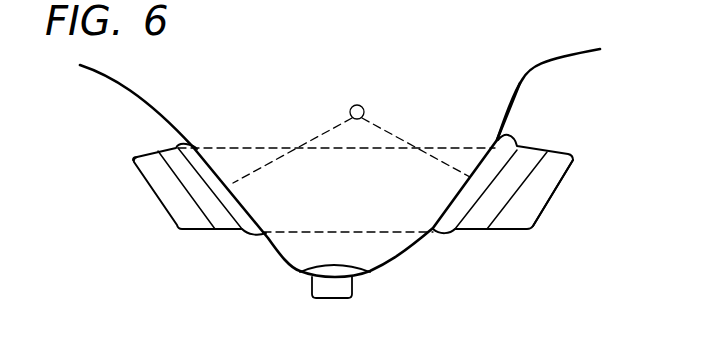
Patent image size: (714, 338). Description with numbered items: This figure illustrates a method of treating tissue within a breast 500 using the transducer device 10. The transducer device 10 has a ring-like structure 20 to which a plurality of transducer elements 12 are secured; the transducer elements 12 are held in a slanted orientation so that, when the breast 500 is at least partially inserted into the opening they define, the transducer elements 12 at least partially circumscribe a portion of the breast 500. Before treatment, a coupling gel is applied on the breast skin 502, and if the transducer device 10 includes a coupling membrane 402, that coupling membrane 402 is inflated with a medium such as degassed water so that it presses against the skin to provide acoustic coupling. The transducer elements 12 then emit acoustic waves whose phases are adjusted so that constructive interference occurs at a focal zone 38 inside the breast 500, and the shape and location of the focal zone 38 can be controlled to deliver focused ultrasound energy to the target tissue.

The transducer device 10 is at (560, 186).
The transducer elements 12 is at (223, 224).
The structure 20 is at (538, 207).
The focal zone 38 is at (352, 106).
The coupling membrane 402 is at (253, 231).
The breast 500 is at (495, 82).
The breast skin 502 is at (503, 125).